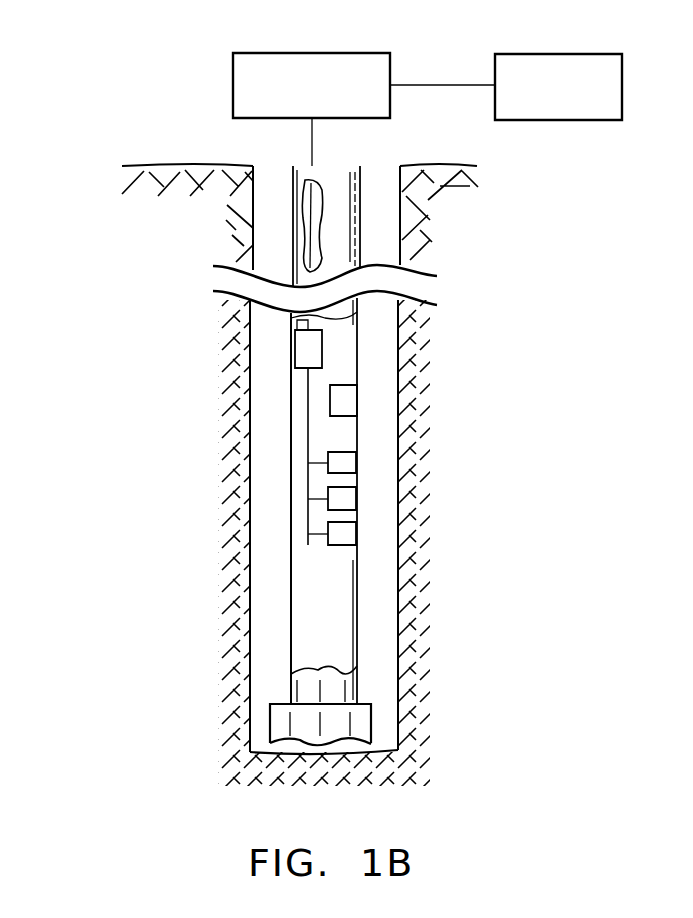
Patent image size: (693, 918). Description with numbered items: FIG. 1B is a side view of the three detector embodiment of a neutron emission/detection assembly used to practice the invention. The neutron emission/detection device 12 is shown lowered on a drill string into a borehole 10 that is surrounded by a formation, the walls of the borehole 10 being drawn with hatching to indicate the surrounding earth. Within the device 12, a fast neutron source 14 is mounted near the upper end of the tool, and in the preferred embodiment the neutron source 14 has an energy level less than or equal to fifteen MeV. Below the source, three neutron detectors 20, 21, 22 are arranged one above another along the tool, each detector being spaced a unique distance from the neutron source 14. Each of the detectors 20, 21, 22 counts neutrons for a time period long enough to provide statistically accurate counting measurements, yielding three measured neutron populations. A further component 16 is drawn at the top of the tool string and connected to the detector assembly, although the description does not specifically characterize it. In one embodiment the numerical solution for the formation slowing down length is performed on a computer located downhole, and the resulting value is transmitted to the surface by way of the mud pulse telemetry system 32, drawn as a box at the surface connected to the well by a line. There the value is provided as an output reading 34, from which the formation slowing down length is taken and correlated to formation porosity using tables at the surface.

The borehole 10 is at (289, 247).
The neutron emission/detection device 12 is at (346, 230).
The neutron source 14 is at (350, 407).
The downhole electronics / power unit 16 is at (305, 348).
The neutron detector 20 is at (350, 463).
The neutron detector 21 is at (350, 499).
The neutron detector 22 is at (350, 534).
The mud pulse telemetry system 32 is at (233, 75).
The output reading 34 is at (622, 72).